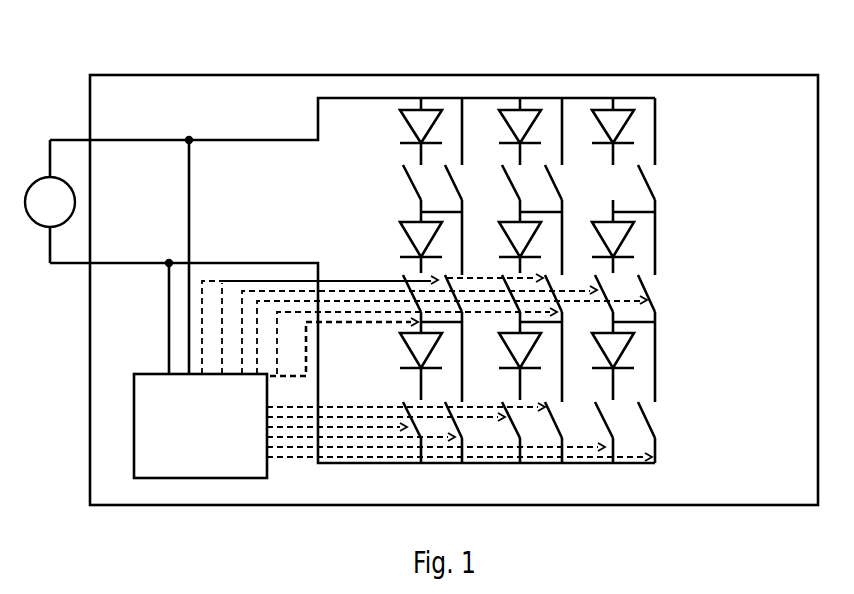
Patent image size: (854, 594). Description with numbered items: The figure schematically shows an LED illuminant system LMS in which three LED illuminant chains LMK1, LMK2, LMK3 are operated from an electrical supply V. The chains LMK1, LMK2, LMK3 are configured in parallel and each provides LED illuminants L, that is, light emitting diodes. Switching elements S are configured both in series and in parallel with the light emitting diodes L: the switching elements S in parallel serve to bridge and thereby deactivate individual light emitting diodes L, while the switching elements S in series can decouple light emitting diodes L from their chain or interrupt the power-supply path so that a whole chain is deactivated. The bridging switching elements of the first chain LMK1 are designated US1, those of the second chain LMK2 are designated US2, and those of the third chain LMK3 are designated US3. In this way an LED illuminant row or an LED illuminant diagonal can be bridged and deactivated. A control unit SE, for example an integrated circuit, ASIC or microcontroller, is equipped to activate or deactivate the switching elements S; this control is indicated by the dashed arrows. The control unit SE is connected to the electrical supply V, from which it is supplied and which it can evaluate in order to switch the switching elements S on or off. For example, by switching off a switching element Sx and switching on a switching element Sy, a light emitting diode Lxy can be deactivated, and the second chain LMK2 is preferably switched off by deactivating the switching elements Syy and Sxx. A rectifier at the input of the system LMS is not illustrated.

The LED illuminant system LMS is at (454, 290).
The control unit SE is at (200, 426).
The electrical supply V is at (50, 201).
The first LED illuminant chain LMK1 is at (421, 82).
The second LED illuminant chain LMK2 is at (520, 82).
The third LED illuminant chain LMK3 is at (613, 82).
The bridging switching elements of the first LED illuminant chain US1 is at (461, 82).
The bridging switching elements of the second LED illuminant chain US2 is at (562, 82).
The bridging switching elements of the third LED illuminant chain US3 is at (656, 82).
The LED illuminant L is at (617, 122).
The light emitting diode Lxy is at (512, 110).
The switching element S is at (407, 185).
The switching element Sy is at (509, 188).
The switching element Sx is at (557, 186).
The switching element Syy is at (515, 430).
The switching element Sxx is at (552, 433).